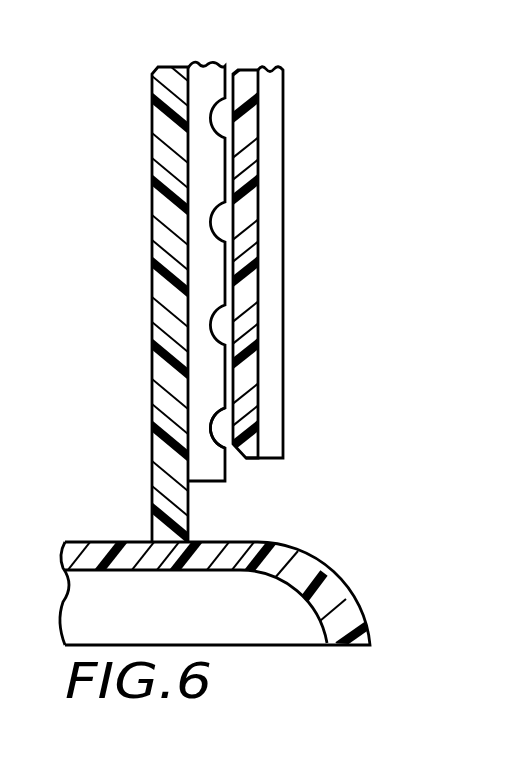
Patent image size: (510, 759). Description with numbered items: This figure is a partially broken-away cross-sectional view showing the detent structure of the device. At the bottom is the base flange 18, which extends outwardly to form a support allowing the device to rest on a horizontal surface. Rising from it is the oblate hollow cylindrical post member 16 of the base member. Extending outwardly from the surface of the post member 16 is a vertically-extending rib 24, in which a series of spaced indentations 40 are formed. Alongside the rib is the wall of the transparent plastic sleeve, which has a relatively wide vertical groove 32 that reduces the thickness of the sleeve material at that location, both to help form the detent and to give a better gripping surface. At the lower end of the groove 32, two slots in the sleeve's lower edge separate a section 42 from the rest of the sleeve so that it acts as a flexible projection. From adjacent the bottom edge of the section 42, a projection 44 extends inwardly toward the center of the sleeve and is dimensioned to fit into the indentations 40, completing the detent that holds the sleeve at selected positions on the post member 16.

The post member 16 is at (153, 180).
The base flange 18 is at (342, 596).
The vertically-extending rib 24 is at (210, 87).
The vertical groove 32 is at (270, 200).
The indentations 40 is at (217, 120).
The section 42 is at (247, 373).
The projection 44 is at (218, 430).